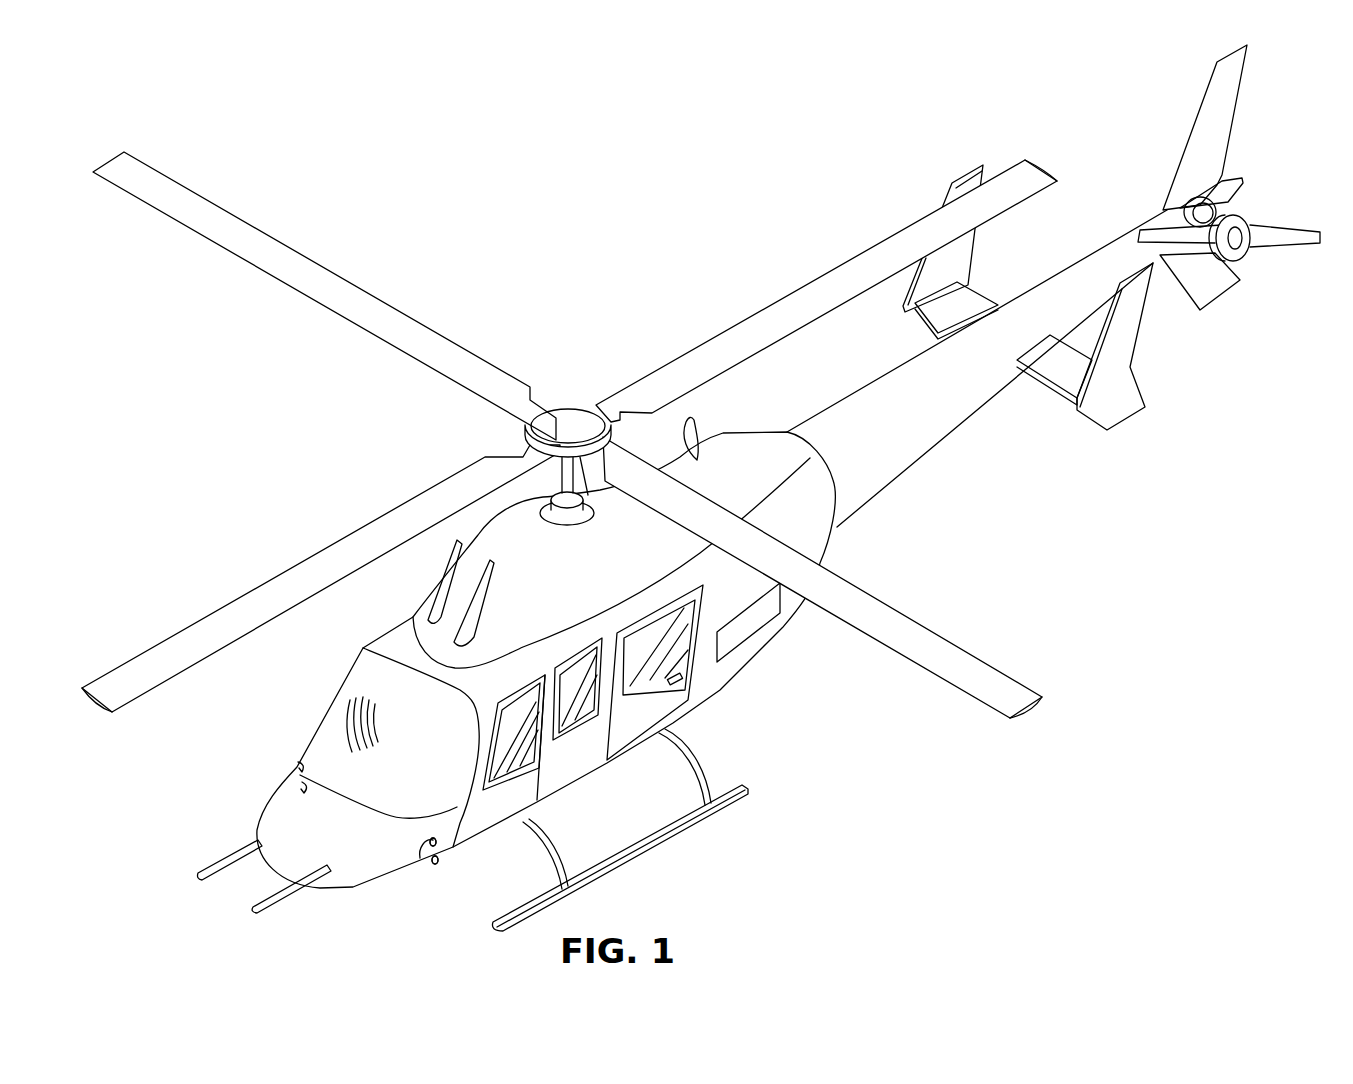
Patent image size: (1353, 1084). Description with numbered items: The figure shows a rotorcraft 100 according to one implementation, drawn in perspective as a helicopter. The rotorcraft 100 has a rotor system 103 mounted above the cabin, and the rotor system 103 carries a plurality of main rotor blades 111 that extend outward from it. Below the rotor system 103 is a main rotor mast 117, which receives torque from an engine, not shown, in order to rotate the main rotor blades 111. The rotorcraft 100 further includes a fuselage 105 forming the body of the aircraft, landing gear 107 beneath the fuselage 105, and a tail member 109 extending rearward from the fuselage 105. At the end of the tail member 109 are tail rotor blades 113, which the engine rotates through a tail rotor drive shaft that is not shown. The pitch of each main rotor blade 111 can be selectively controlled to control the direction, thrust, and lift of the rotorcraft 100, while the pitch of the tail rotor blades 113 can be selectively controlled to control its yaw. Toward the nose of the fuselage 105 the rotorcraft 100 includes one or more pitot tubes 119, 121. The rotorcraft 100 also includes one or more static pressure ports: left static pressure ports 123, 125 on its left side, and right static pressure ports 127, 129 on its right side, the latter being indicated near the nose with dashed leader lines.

The rotorcraft 100 is at (281, 108).
The rotor system 103 is at (581, 373).
The fuselage 105 is at (356, 888).
The landing gear 107 is at (713, 819).
The tail member 109 is at (962, 420).
The main rotor blades 111 is at (277, 577).
The tail rotor blades 113 is at (1288, 224).
The main rotor mast 117 is at (550, 476).
The pitot tube 119 is at (215, 866).
The pitot tube 121 is at (280, 904).
The left static pressure port 123 is at (438, 862).
The left static pressure port 125 is at (431, 841).
The right static pressure port 127 is at (300, 764).
The right static pressure port 129 is at (298, 776).